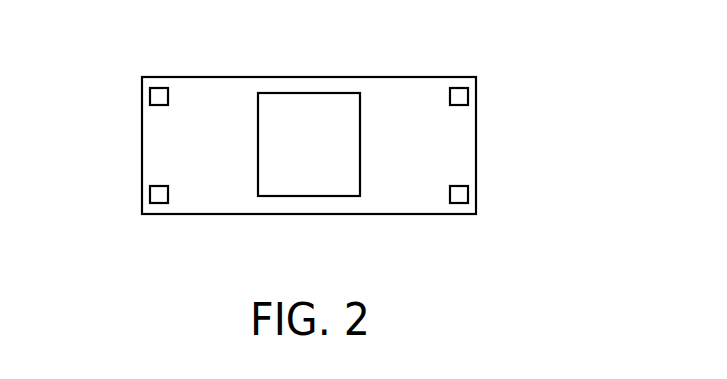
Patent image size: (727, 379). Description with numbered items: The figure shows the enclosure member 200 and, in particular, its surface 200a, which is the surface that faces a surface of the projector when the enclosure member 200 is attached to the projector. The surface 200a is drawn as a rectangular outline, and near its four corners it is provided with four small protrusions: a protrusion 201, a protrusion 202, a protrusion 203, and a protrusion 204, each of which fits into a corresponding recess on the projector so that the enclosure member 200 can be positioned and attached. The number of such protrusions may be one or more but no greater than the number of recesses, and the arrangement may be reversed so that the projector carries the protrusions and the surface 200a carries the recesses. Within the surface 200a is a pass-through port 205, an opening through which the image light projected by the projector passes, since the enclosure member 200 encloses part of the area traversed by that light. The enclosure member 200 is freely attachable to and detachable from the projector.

The enclosure member 200 is at (402, 78).
The surface 200a is at (232, 112).
The protrusion 201 is at (468, 95).
The protrusion 202 is at (468, 198).
The protrusion 203 is at (150, 95).
The protrusion 204 is at (150, 194).
The pass-through port 205 is at (260, 165).